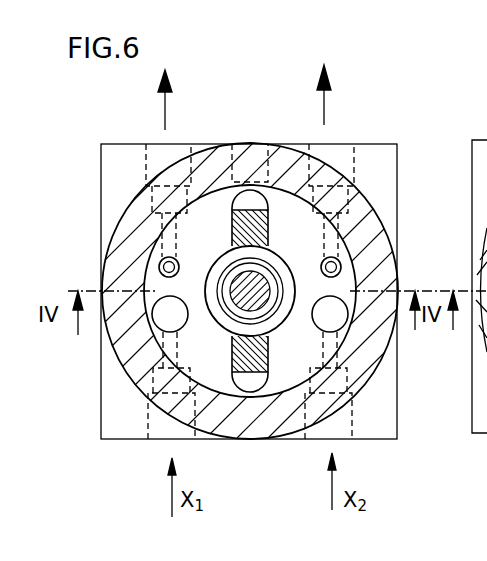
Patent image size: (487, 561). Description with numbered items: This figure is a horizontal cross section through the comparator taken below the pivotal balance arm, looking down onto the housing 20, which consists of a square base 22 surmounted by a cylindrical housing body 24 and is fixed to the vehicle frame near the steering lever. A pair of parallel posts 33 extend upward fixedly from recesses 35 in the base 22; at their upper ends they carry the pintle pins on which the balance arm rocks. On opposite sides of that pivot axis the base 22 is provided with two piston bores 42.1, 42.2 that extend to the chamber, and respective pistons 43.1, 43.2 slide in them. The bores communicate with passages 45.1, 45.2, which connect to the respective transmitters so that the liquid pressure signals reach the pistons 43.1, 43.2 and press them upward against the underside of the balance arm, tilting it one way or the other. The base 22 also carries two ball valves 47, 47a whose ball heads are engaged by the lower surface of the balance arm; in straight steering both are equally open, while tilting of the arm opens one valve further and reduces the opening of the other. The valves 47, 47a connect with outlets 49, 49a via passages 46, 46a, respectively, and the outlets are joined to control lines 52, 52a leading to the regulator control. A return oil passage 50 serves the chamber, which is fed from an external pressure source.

The housing 20 is at (445, 62).
The square base 22 is at (376, 163).
The cylindrical housing body 24 is at (356, 213).
The posts 33 is at (227, 217).
The recesses 35 is at (250, 198).
The piston bore 42.1 is at (173, 320).
The piston bore 42.2 is at (338, 313).
The piston 43.1 is at (163, 330).
The piston 43.2 is at (331, 323).
The passage 45.1 is at (167, 433).
The passage 45.2 is at (340, 427).
The passage 46 is at (165, 240).
The passage 46a is at (330, 238).
The ball valve 47 is at (160, 263).
The ball valve 47a is at (335, 260).
The outlet 49 is at (163, 160).
The outlet 49a is at (320, 148).
The return oil passage 50 is at (243, 156).
The control line 52 is at (163, 113).
The control line 52a is at (326, 98).